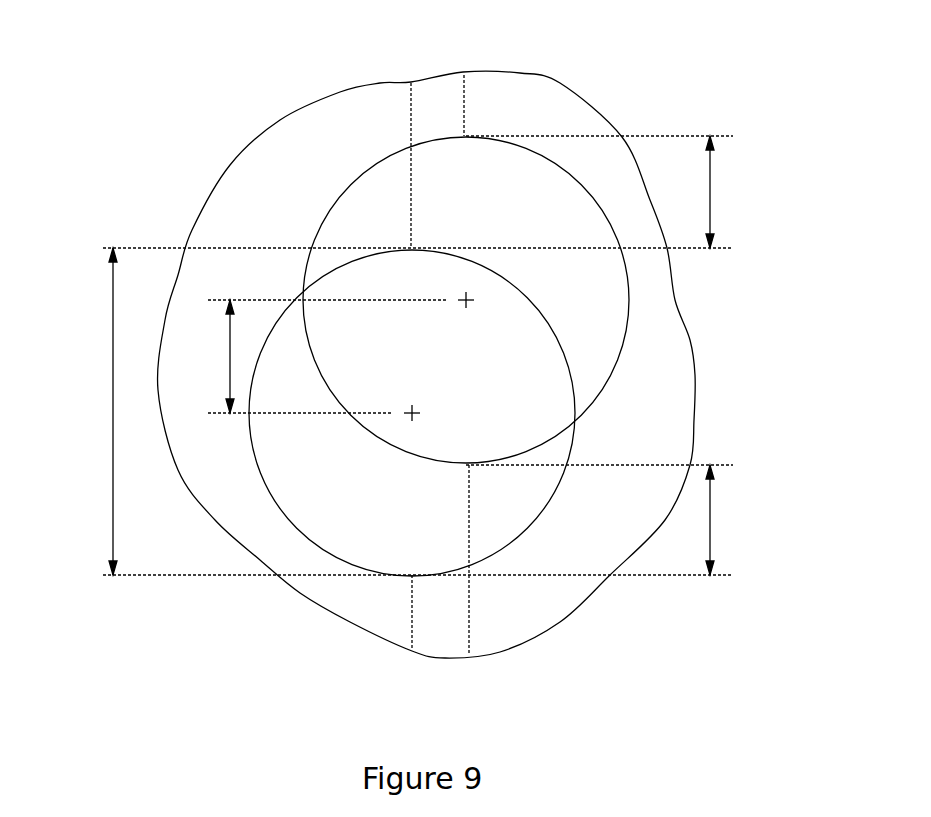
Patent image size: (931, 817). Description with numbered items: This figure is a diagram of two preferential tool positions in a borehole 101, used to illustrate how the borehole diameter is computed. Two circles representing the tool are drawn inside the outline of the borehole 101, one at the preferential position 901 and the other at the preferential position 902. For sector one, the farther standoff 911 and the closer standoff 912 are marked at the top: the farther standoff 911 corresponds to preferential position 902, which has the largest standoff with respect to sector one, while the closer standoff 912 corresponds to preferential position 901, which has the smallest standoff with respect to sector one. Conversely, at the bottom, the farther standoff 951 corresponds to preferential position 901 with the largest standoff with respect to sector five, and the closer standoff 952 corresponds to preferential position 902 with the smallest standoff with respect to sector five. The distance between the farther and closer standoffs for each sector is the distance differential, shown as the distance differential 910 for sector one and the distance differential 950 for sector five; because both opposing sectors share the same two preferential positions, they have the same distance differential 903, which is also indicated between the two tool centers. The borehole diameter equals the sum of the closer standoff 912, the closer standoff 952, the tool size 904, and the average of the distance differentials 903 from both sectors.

The borehole 101 is at (232, 165).
The preferential position 901 is at (466, 300).
The preferential position 902 is at (413, 413).
The distance differential 903 is at (230, 365).
The tool size 904 is at (112, 372).
The distance differential for sector 1 910 is at (710, 205).
The farther standoff 911 is at (410, 128).
The closer standoff 912 is at (463, 103).
The distance differential for sector 5 950 is at (710, 533).
The farther standoff 951 is at (470, 600).
The closer standoff 952 is at (410, 617).